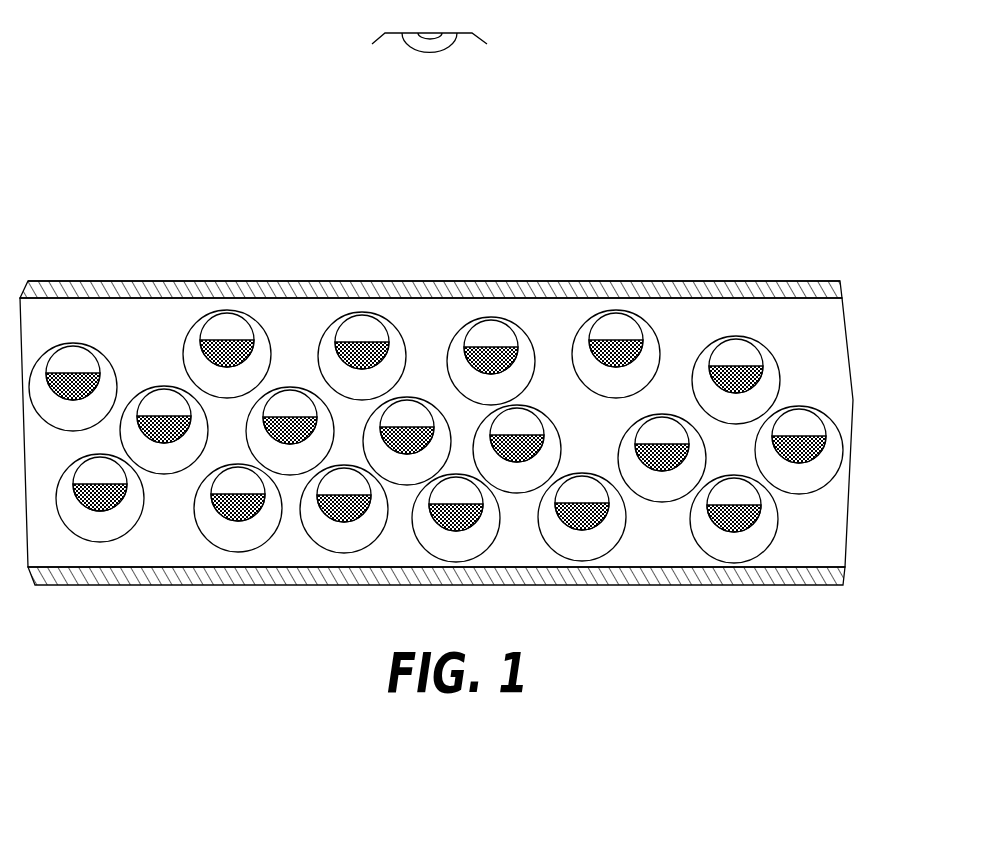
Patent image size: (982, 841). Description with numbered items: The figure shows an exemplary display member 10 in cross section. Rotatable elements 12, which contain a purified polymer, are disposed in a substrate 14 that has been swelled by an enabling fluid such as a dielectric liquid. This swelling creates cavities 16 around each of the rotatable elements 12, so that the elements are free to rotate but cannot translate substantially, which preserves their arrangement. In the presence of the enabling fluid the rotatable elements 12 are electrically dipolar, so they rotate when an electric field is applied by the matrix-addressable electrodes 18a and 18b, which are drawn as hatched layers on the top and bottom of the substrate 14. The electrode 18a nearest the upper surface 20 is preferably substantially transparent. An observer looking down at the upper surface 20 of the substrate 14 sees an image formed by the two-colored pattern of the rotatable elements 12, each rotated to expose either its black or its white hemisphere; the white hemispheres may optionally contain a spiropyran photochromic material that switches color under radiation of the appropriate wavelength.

The display member 10 is at (70, 185).
The rotatable elements 12 is at (590, 327).
The substrate 14 is at (835, 373).
The cavities 16 is at (702, 347).
The matrix-addressable electrode 18a is at (840, 281).
The matrix-addressable electrode 18b is at (843, 585).
The upper surface 20 is at (260, 269).